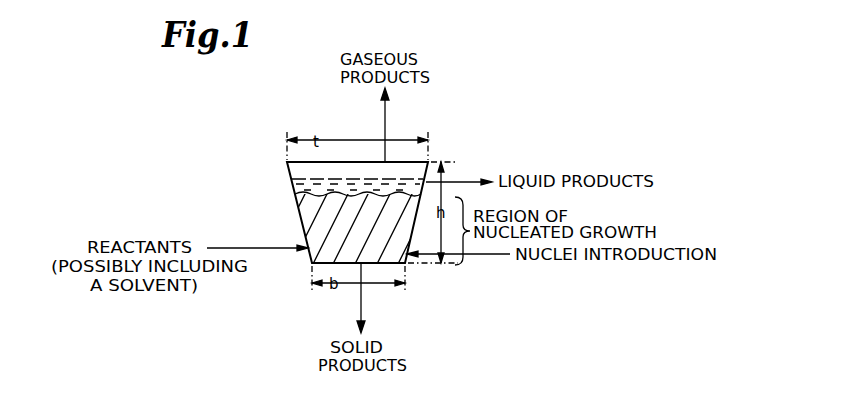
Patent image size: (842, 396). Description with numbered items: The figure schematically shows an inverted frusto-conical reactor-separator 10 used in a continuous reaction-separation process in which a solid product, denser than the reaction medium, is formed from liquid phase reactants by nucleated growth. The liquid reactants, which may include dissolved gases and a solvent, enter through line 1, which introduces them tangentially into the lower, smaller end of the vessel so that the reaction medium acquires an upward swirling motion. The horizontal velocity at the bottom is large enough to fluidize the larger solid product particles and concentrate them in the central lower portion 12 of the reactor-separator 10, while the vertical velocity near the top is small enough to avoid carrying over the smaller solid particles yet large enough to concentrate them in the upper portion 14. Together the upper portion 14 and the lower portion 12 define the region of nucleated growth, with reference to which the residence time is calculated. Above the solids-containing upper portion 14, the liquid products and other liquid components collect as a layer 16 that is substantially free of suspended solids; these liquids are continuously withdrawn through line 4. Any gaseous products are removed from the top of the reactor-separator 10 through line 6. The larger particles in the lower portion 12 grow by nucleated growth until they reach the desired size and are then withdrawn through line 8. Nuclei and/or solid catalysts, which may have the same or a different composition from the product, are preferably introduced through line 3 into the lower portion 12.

The reactor-separator 10 is at (264, 124).
The line 6 is at (387, 116).
The layer 16 is at (300, 178).
The line 4 is at (461, 181).
The line 1 is at (252, 248).
The upper portion 14 is at (312, 226).
The central lower portion 12 is at (311, 260).
The line 8 is at (358, 309).
The line 3 is at (497, 254).